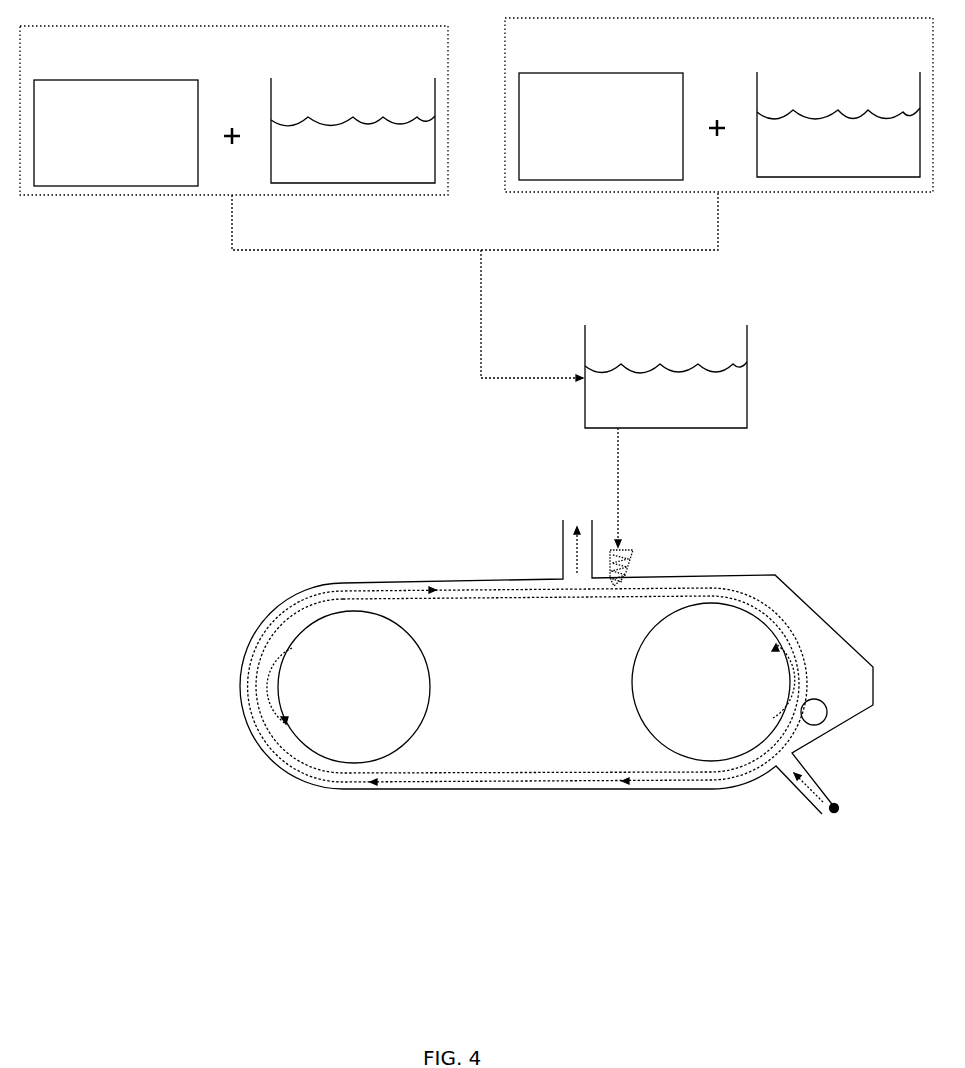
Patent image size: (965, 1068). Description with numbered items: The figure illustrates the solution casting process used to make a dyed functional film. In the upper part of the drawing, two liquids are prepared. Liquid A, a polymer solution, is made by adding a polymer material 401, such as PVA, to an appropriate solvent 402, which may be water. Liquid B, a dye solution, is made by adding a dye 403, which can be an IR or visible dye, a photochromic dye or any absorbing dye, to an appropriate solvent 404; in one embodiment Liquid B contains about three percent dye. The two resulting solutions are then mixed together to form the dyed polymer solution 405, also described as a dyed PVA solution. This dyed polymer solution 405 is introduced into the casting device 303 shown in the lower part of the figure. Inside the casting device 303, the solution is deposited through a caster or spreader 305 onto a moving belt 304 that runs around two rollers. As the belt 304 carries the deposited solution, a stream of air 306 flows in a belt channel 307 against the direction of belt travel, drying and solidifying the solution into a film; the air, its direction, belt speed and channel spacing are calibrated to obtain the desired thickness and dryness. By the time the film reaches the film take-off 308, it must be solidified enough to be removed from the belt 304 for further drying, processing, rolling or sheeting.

The polymer material 401 is at (115, 112).
The solvent 402 is at (353, 110).
The dye 403 is at (601, 104).
The solvent 404 is at (838, 103).
The dyed polymer solution 405 is at (665, 356).
The casting device 303 is at (545, 727).
The moving belt 304 is at (718, 593).
The caster or spreader 305 is at (627, 562).
The stream of air 306 is at (409, 587).
The belt channel 307 is at (473, 579).
The film take-off 308 is at (827, 705).